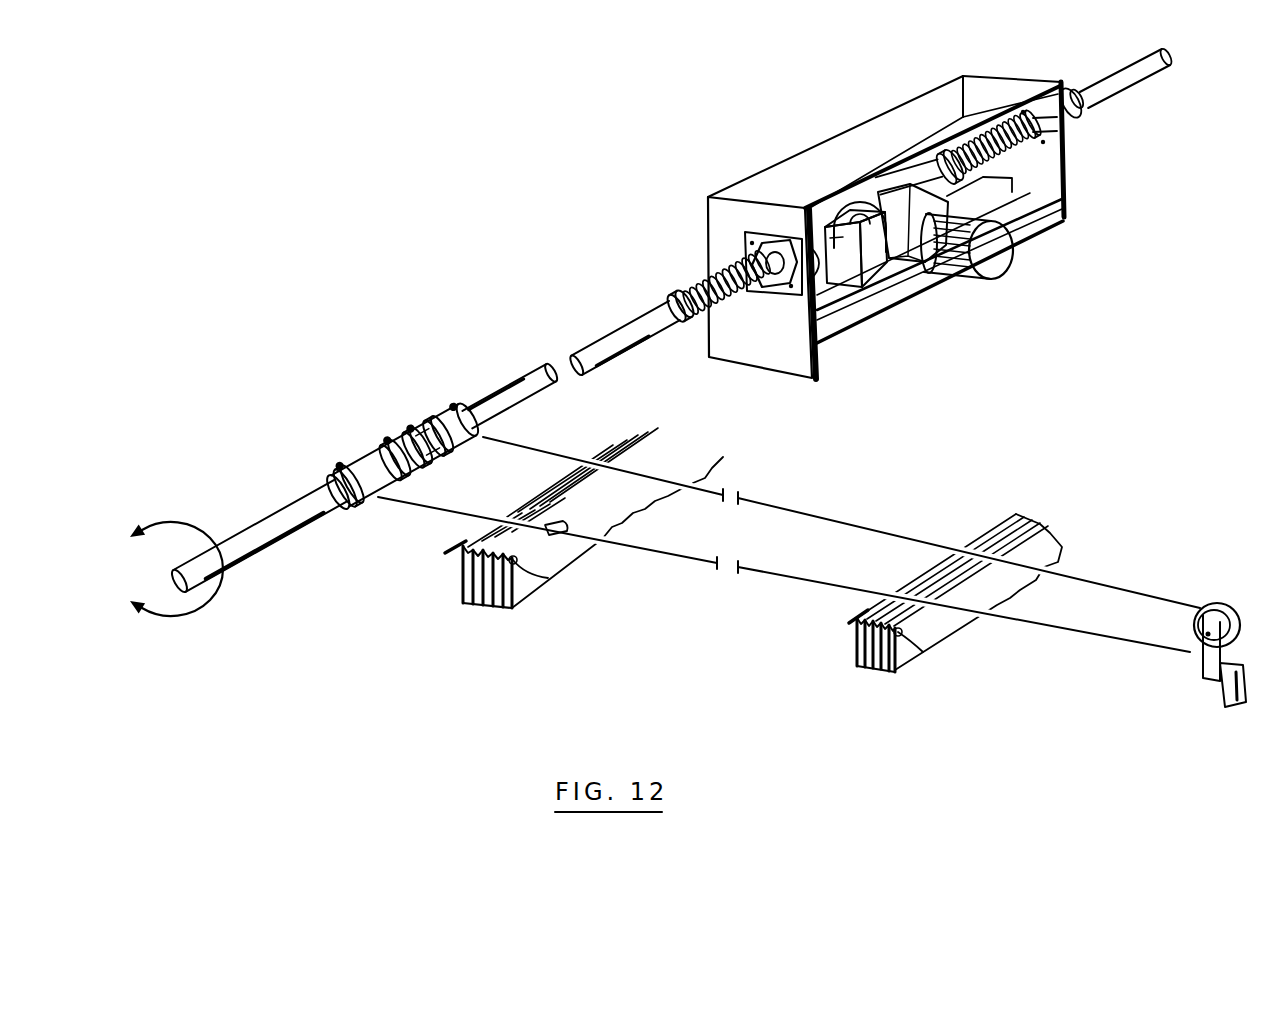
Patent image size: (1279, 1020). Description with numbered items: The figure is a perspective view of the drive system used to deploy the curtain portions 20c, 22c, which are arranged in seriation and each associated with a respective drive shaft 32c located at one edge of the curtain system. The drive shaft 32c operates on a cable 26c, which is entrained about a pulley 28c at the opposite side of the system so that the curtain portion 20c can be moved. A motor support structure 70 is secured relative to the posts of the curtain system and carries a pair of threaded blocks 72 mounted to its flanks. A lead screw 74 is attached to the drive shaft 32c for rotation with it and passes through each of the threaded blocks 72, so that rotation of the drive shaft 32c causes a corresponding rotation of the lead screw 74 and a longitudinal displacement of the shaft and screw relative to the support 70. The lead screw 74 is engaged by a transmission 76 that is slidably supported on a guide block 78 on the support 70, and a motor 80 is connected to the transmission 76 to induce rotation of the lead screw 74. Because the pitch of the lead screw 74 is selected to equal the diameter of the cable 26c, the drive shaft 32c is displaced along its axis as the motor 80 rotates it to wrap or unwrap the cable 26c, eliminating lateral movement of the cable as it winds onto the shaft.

The motor support structure 70 is at (752, 178).
The threaded blocks 72 is at (1064, 128).
The lead screw 74 is at (755, 302).
The transmission 76 is at (872, 192).
The guide block 78 is at (905, 287).
The motor 80 is at (1000, 250).
The first curtain portion 20c is at (565, 548).
The second curtain portion 22c is at (515, 593).
The cable 26c is at (423, 507).
The pulley 28c is at (1200, 658).
The drive shaft 32c is at (258, 523).